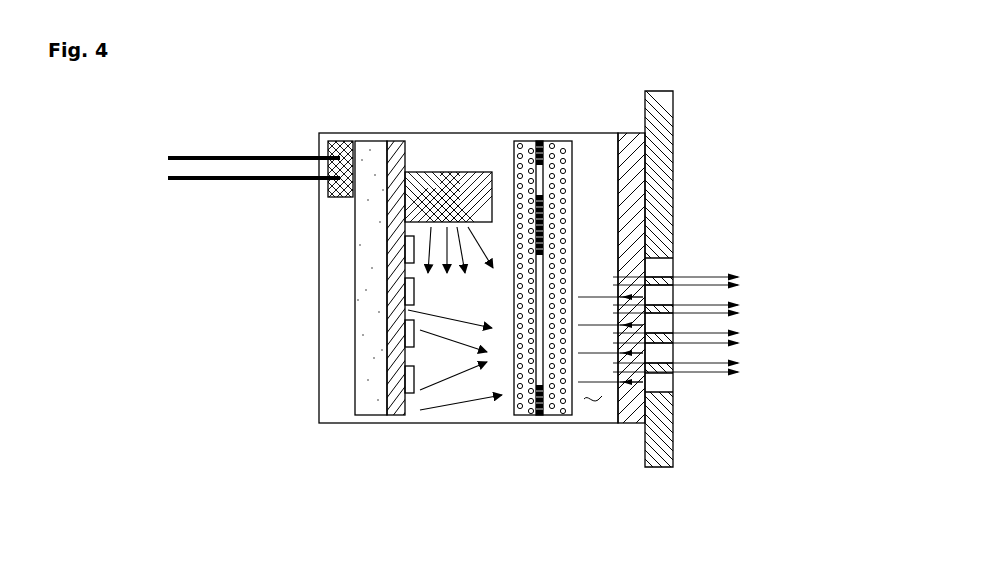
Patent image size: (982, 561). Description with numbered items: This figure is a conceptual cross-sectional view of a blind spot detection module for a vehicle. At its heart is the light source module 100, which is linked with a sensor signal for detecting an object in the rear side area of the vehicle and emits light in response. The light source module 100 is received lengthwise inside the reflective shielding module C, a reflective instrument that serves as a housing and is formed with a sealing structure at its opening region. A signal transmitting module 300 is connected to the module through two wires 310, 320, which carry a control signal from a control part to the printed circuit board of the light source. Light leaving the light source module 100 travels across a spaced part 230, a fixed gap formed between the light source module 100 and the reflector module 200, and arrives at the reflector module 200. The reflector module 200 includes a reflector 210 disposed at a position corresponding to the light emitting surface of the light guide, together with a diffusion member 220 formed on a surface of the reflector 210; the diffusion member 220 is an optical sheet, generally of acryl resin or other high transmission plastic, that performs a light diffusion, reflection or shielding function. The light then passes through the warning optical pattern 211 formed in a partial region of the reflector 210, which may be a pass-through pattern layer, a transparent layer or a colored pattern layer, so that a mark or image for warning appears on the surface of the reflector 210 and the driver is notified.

The light source module 100 is at (572, 437).
The reflector module 200 is at (685, 296).
The reflector 210 is at (687, 289).
The warning optical pattern 211 is at (690, 332).
The diffusion member 220 is at (630, 423).
The spaced part 230 is at (588, 405).
The signal transmitting module 300 is at (196, 168).
The wire 310 is at (168, 158).
The wire 320 is at (168, 178).
The reflective shielding module C is at (319, 337).